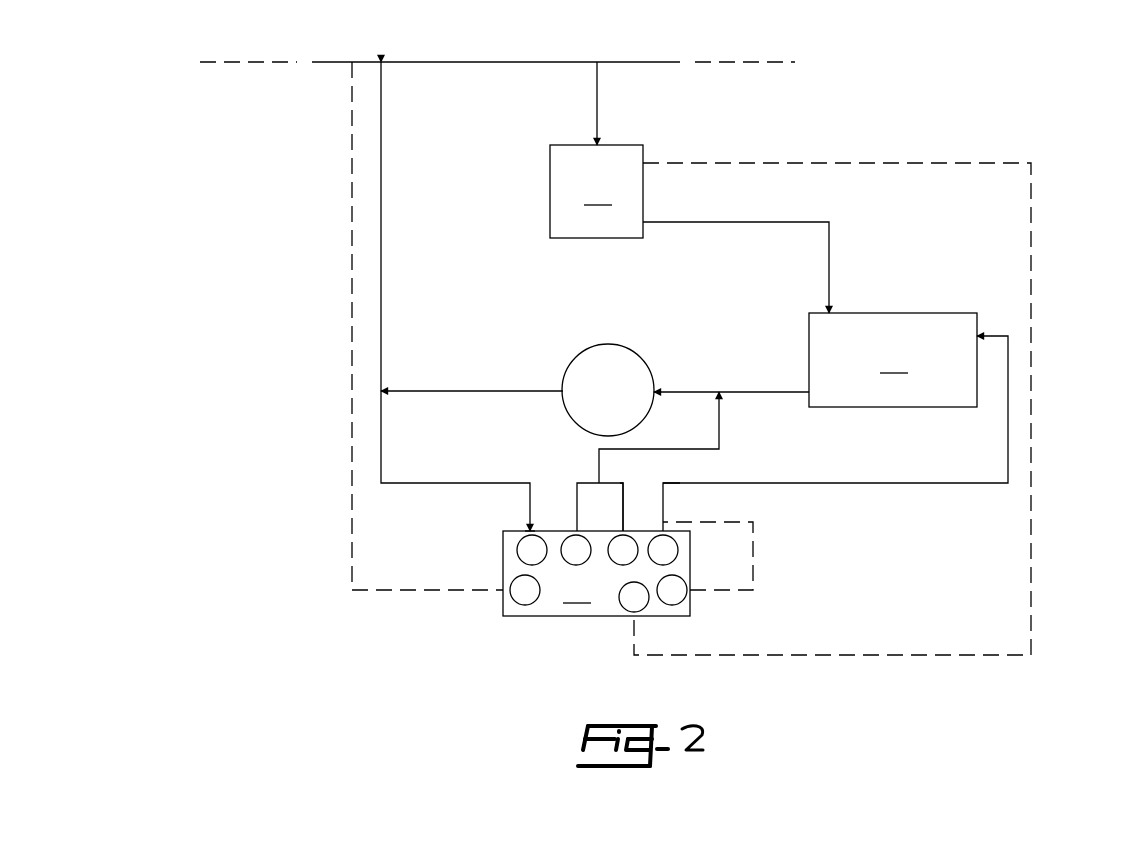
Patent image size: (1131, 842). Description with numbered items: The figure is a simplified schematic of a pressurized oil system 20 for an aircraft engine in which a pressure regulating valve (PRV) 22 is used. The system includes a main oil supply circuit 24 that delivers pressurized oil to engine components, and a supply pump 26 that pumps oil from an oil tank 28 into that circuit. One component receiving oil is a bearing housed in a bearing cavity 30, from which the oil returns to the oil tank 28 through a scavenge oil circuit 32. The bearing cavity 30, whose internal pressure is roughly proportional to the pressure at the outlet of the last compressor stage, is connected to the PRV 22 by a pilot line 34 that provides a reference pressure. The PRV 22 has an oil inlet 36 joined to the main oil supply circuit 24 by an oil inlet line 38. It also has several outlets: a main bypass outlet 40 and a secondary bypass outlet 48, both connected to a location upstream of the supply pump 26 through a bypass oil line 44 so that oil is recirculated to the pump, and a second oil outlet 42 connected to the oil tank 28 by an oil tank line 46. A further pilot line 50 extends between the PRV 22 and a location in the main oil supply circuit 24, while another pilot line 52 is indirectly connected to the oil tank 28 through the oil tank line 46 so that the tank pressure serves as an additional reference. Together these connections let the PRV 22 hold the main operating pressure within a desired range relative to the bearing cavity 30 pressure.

The pressurized oil system 20 is at (895, 96).
The pressure regulating valve 22 is at (596, 573).
The main oil supply circuit 24 is at (522, 62).
The supply pump 26 is at (578, 358).
The oil tank 28 is at (893, 360).
The bearing cavity 30 is at (596, 150).
The scavenge oil circuit 32 is at (730, 222).
The pilot line 34 is at (1031, 277).
The oil inlet 36 is at (528, 531).
The oil inlet line 38 is at (503, 483).
The main bypass outlet 40 is at (573, 531).
The second oil outlet 42 is at (665, 512).
The bypass oil line 44 is at (722, 421).
The oil tank line 46 is at (855, 483).
The secondary bypass outlet 48 is at (625, 531).
The pilot line 50 is at (350, 320).
The pilot line 52 is at (753, 555).